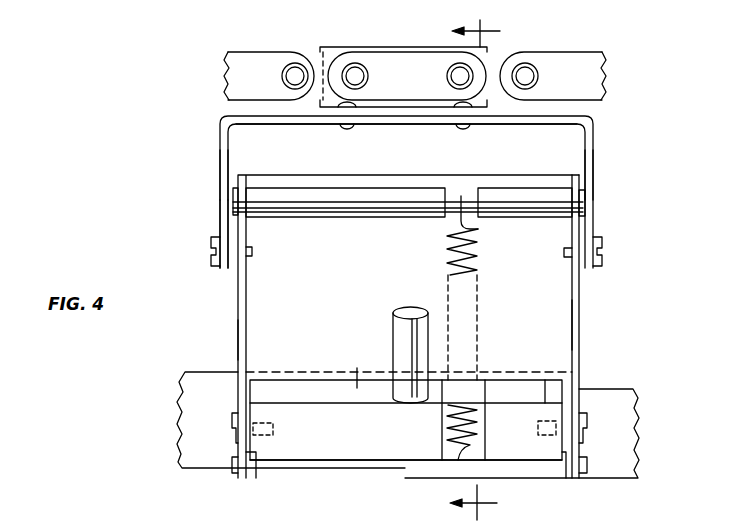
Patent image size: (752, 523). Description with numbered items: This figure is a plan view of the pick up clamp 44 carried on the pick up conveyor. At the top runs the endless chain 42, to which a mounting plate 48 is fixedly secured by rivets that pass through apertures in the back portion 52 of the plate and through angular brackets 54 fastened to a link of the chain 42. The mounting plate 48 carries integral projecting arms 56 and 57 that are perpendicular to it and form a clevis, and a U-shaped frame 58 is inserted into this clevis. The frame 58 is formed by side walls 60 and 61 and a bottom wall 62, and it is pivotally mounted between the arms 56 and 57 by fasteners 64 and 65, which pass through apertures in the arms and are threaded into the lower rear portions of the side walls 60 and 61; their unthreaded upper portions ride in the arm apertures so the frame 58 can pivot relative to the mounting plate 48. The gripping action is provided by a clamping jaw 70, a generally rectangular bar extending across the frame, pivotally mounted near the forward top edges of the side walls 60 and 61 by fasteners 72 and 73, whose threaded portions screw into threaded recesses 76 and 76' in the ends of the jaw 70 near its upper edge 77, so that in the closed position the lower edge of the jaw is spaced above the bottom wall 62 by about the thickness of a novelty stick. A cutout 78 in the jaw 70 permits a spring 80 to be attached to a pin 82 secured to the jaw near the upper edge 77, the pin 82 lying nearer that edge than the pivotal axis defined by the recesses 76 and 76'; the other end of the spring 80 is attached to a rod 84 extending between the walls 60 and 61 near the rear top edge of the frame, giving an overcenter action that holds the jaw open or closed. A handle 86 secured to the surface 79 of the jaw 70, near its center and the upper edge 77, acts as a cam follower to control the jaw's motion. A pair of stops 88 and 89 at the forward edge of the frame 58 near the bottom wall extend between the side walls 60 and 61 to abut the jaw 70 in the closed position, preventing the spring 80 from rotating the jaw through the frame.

The endless chain 42 is at (263, 70).
The mounting plate 48 is at (219, 132).
The back portion 52 is at (292, 126).
The angular brackets 54 is at (398, 106).
The projecting arm 57 is at (219, 168).
The projecting arm 56 is at (593, 171).
The clamp 44 is at (216, 208).
The rod 84 is at (349, 207).
The spring 80 is at (450, 263).
The fastener 65 is at (211, 256).
The fastener 64 is at (602, 256).
The U-shaped frame 58 is at (238, 304).
The side wall 60 is at (579, 293).
The bottom wall 62 is at (550, 324).
The side wall 61 is at (238, 342).
The clamping jaw 70 is at (304, 386).
The surface 79 is at (356, 366).
The handle 86 is at (399, 326).
The cutout 78 is at (485, 388).
The fastener 73 is at (232, 421).
The threaded recess 76' is at (282, 431).
The threaded recess 76 is at (524, 431).
The fastener 72 is at (585, 421).
The stop 89 is at (253, 468).
The upper edge 77 is at (357, 445).
The pin 82 is at (448, 462).
The stop 88 is at (564, 466).